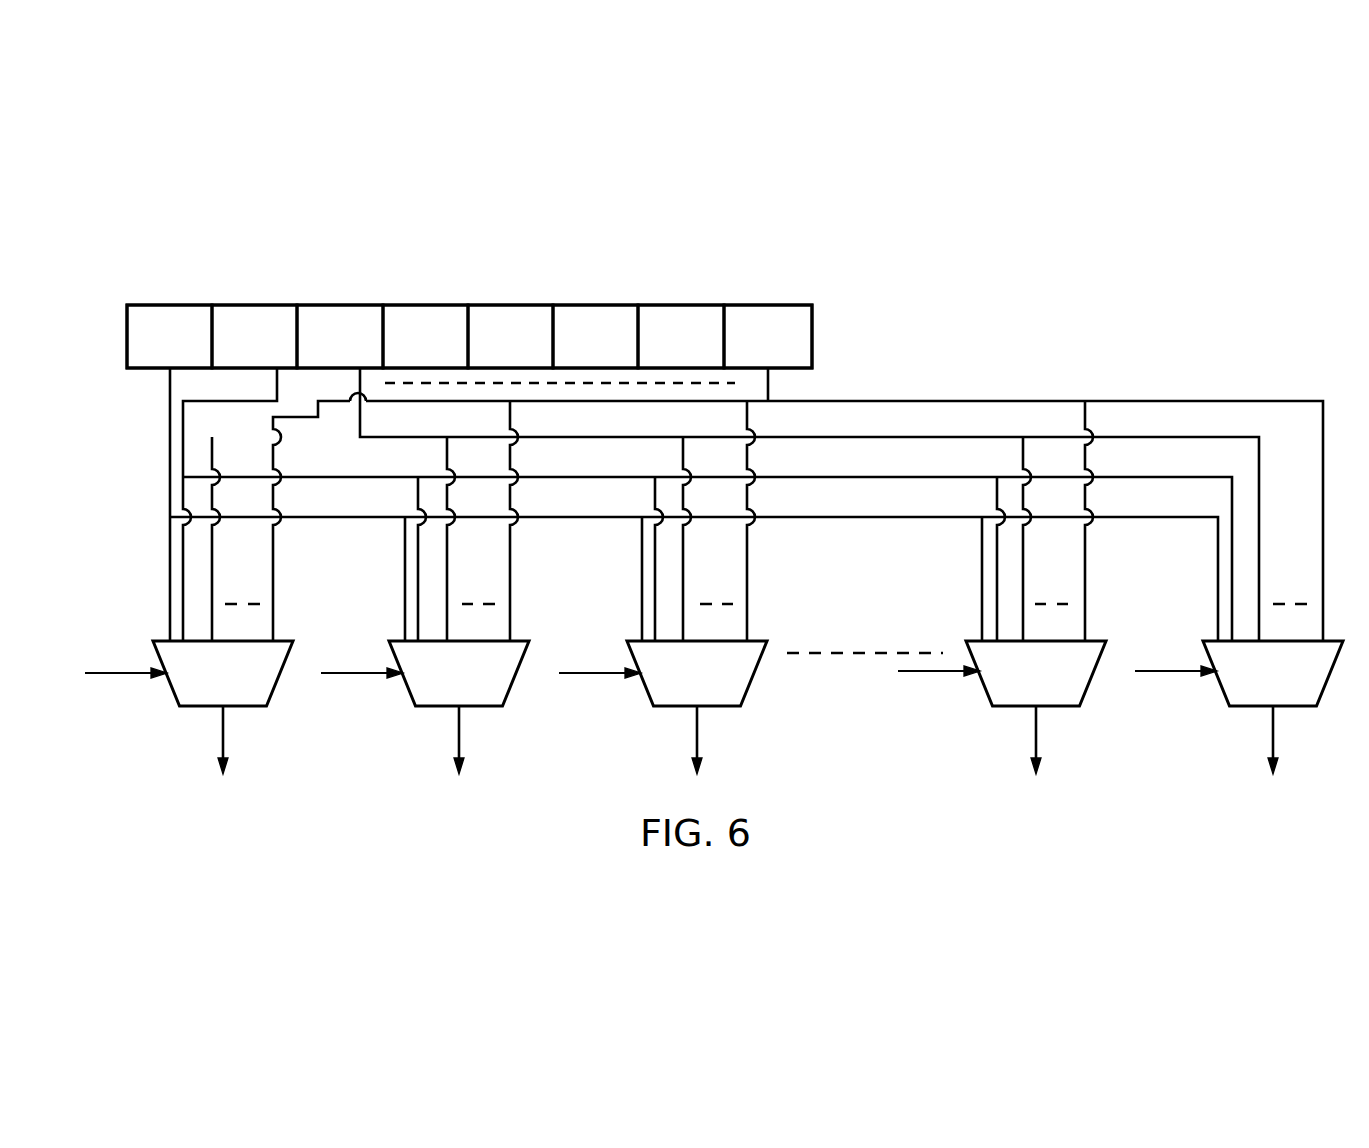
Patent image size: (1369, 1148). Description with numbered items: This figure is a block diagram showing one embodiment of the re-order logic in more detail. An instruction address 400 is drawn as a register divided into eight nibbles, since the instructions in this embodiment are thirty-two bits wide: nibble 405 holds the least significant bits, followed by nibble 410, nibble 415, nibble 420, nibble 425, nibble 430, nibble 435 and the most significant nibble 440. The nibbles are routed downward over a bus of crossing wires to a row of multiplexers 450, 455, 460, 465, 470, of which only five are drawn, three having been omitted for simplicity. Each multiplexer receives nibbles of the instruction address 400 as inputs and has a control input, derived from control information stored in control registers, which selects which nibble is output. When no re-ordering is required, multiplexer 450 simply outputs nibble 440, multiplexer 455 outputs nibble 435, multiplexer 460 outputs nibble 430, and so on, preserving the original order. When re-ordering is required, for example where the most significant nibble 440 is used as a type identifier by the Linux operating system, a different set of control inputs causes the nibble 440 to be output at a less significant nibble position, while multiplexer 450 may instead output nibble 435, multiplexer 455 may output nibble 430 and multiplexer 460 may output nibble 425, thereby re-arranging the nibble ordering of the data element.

The instruction address 400 is at (835, 336).
The nibble 405 is at (767, 304).
The nibble 410 is at (681, 304).
The nibble 415 is at (596, 304).
The nibble 420 is at (510, 304).
The nibble 425 is at (426, 304).
The nibble 430 is at (340, 304).
The nibble 435 is at (254, 304).
The most significant nibble 440 is at (170, 304).
The multiplexer 450 is at (248, 707).
The multiplexer 455 is at (484, 707).
The multiplexer 460 is at (722, 707).
The multiplexer 465 is at (1061, 707).
The multiplexer 470 is at (1298, 707).